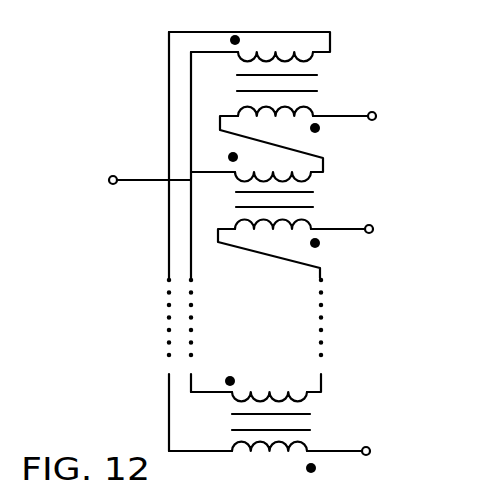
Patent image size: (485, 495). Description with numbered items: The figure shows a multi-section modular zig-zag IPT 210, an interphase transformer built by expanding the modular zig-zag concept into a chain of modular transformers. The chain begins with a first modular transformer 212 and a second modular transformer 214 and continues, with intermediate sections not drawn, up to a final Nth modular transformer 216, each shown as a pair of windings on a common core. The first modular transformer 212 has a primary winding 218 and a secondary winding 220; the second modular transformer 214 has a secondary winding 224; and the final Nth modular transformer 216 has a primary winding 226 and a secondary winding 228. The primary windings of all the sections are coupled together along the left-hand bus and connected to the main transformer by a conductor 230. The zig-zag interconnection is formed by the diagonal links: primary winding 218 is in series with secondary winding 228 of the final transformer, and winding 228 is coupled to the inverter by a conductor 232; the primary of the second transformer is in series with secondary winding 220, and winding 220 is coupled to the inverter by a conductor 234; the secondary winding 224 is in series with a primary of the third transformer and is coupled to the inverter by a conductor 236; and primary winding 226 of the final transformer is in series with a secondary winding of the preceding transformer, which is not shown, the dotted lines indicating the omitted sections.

The multi-section modular zig-zag IPT 210 is at (392, 112).
The first modular transformer 212 is at (320, 82).
The second modular transformer 214 is at (320, 198).
The final Nth modular transformer 216 is at (315, 422).
The primary winding 218 is at (315, 57).
The secondary winding 220 is at (240, 107).
The secondary winding 224 is at (312, 222).
The primary winding 226 is at (310, 402).
The secondary winding 228 is at (290, 453).
The conductor 230 is at (153, 177).
The conductor 232 is at (339, 455).
The conductor 234 is at (338, 118).
The conductor 236 is at (347, 235).